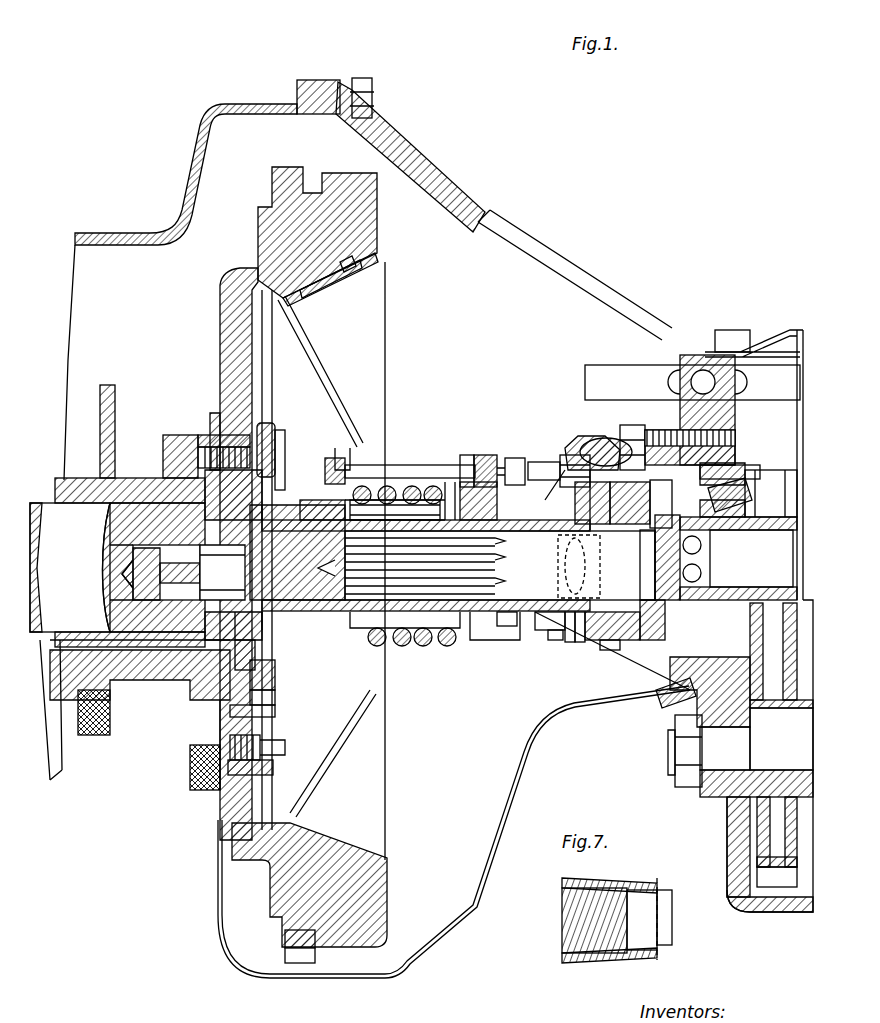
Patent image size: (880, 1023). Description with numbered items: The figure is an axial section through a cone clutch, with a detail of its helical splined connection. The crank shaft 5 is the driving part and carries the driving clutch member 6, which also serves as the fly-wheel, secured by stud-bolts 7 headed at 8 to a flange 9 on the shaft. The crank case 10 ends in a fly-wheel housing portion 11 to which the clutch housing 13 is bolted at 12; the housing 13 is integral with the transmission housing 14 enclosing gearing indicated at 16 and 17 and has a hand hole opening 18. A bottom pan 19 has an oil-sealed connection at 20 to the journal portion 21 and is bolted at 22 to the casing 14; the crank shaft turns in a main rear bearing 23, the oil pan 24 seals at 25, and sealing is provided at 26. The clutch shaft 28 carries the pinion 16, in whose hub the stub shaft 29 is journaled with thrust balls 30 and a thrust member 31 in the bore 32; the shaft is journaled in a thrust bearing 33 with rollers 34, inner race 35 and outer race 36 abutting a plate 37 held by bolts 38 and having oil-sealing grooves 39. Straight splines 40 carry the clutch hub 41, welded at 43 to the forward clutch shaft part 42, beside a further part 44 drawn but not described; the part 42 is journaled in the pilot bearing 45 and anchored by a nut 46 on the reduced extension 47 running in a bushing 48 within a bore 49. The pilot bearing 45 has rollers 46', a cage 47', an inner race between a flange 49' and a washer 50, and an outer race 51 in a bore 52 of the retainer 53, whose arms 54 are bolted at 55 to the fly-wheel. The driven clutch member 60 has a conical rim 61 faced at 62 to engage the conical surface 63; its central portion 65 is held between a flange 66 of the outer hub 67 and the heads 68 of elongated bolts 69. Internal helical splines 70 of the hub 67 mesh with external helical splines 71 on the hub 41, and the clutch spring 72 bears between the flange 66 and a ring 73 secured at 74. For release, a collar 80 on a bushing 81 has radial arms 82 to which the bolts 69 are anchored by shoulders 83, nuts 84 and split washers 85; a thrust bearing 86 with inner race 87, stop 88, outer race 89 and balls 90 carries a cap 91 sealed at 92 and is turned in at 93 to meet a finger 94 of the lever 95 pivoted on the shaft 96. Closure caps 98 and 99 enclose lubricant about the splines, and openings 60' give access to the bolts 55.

In FIG. 1, the crank shaft 5 is at (42, 508).
In FIG. 1, the driving clutch member 6 is at (222, 318).
In FIG. 1, the stud-bolts 7 is at (188, 435).
In FIG. 1, the heads of stud-bolts 8 is at (268, 440).
In FIG. 1, the flange 9 is at (208, 435).
In FIG. 1, the crank case 10 is at (112, 240).
In FIG. 1, the fly-wheel housing portion 11 is at (222, 106).
In FIG. 1, the bolts 12 is at (362, 88).
In FIG. 1, the clutch housing 13 is at (418, 168).
In FIG. 1, the transmission housing 14 is at (730, 420).
In FIG. 1, the pinion 16 is at (795, 465).
In FIG. 1, the gearing 17 is at (800, 628).
In FIG. 1, the hand hole opening 18 is at (528, 240).
In FIG. 1, the bottom pan 19 is at (524, 792).
In FIG. 1, the oil-sealed connection 20 is at (195, 780).
In FIG. 1, the journal portion 21 is at (125, 680).
In FIG. 1, the bolted connection 22 is at (668, 700).
In FIG. 1, the main rear crank shaft bearing 23 is at (70, 505).
In FIG. 1, the crank case oil pan 24 is at (52, 780).
In FIG. 1, the oil-sealing relation 25 is at (95, 735).
In FIG. 1, the oil-sealing provision 26 is at (175, 478).
In FIG. 1, the clutch shaft 28 is at (505, 628).
In FIG. 1, the stub shaft 29 is at (780, 560).
In FIG. 1, the thrust ball members 30 is at (702, 550).
In FIG. 1, the thrust member 31 is at (660, 570).
In FIG. 1, the bore 32 is at (640, 615).
In FIG. 1, the external radial and axial thrust bearing 33 is at (752, 486).
In FIG. 1, the thrust rollers 34 is at (745, 500).
In FIG. 1, the inner race 35 is at (790, 486).
In FIG. 1, the outer race 36 is at (742, 466).
In FIG. 1, the plate 37 is at (662, 504).
In FIG. 1, the bolts 38 is at (650, 430).
In FIG. 1, the oil-sealing grooves 39 is at (655, 528).
In FIG. 1, the straight longitudinal splines 40 is at (490, 642).
In FIG. 1, the clutch hub 41 is at (284, 718).
In FIG. 7, the clutch hub 41 is at (672, 918).
In FIG. 1, the forward clutch shaft part 42 is at (278, 650).
In FIG. 1, the weld 43 is at (297, 548).
In FIG. 1, the sleeve plate 44 is at (426, 546).
In FIG. 1, the pilot bearing 45 is at (170, 478).
In FIG. 1, the nut 46 is at (111, 567).
In FIG. 1, the rollers 46' is at (293, 479).
In FIG. 1, the reduced forward extension 47 is at (141, 575).
In FIG. 1, the cage 47' is at (295, 546).
In FIG. 1, the bushing 48 is at (195, 574).
In FIG. 1, the bore 49 is at (109, 561).
In FIG. 1, the flange 49' is at (279, 640).
In FIG. 1, the washer 50 is at (240, 575).
In FIG. 1, the outer race 51 is at (286, 462).
In FIG. 1, the bore 52 is at (276, 676).
In FIG. 1, the pilot bearing retainer 53 is at (276, 697).
In FIG. 1, the arms 54 is at (278, 712).
In FIG. 1, the bolts 55 is at (290, 758).
In FIG. 1, the driven clutch member 60 is at (323, 561).
In FIG. 1, the openings 60' is at (333, 753).
In FIG. 1, the outer conical rim 61 is at (340, 288).
In FIG. 1, the friction facing 62 is at (302, 297).
In FIG. 1, the internal conical driving surface 63 is at (330, 280).
In FIG. 1, the radially disposed central portion 65 is at (352, 470).
In FIG. 1, the flange 66 is at (360, 478).
In FIG. 1, the outer clutch hub member 67 is at (370, 505).
In FIG. 7, the outer clutch hub member 67 is at (660, 880).
In FIG. 1, the heads 68 is at (340, 448).
In FIG. 1, the elongated bolts 69 is at (442, 470).
In FIG. 1, the internal helical splines 70 is at (425, 500).
In FIG. 7, the internal helical splines 70 is at (573, 876).
In FIG. 1, the external helical splines 71 is at (390, 646).
In FIG. 7, the external helical splines 71 is at (562, 928).
In FIG. 1, the clutch spring 72 is at (330, 505).
In FIG. 1, the ring 73 is at (462, 470).
In FIG. 1, the securing means 74 is at (479, 466).
In FIG. 1, the collar 80 is at (505, 530).
In FIG. 1, the bushing 81 is at (570, 612).
In FIG. 1, the radial arms 82 is at (478, 501).
In FIG. 1, the shoulders 83 is at (480, 462).
In FIG. 1, the nuts 84 is at (540, 462).
In FIG. 1, the split washers 85 is at (510, 458).
In FIG. 1, the anti-friction thrust bearing 86 is at (575, 470).
In FIG. 1, the inner race 87 is at (568, 642).
In FIG. 1, the stop 88 is at (631, 503).
In FIG. 1, the outer race 89 is at (592, 498).
In FIG. 1, the ball-bearings 90 is at (580, 642).
In FIG. 1, the cap 91 is at (618, 642).
In FIG. 1, the oil-sealing means 92 is at (604, 650).
In FIG. 1, the turned-in forward end 93 is at (552, 640).
In FIG. 1, the finger 94 is at (558, 582).
In FIG. 1, the operating lever 95 is at (604, 440).
In FIG. 1, the shaft 96 is at (560, 566).
In FIG. 1, the closure cap 98 is at (330, 456).
In FIG. 1, the closure cap 99 is at (440, 645).